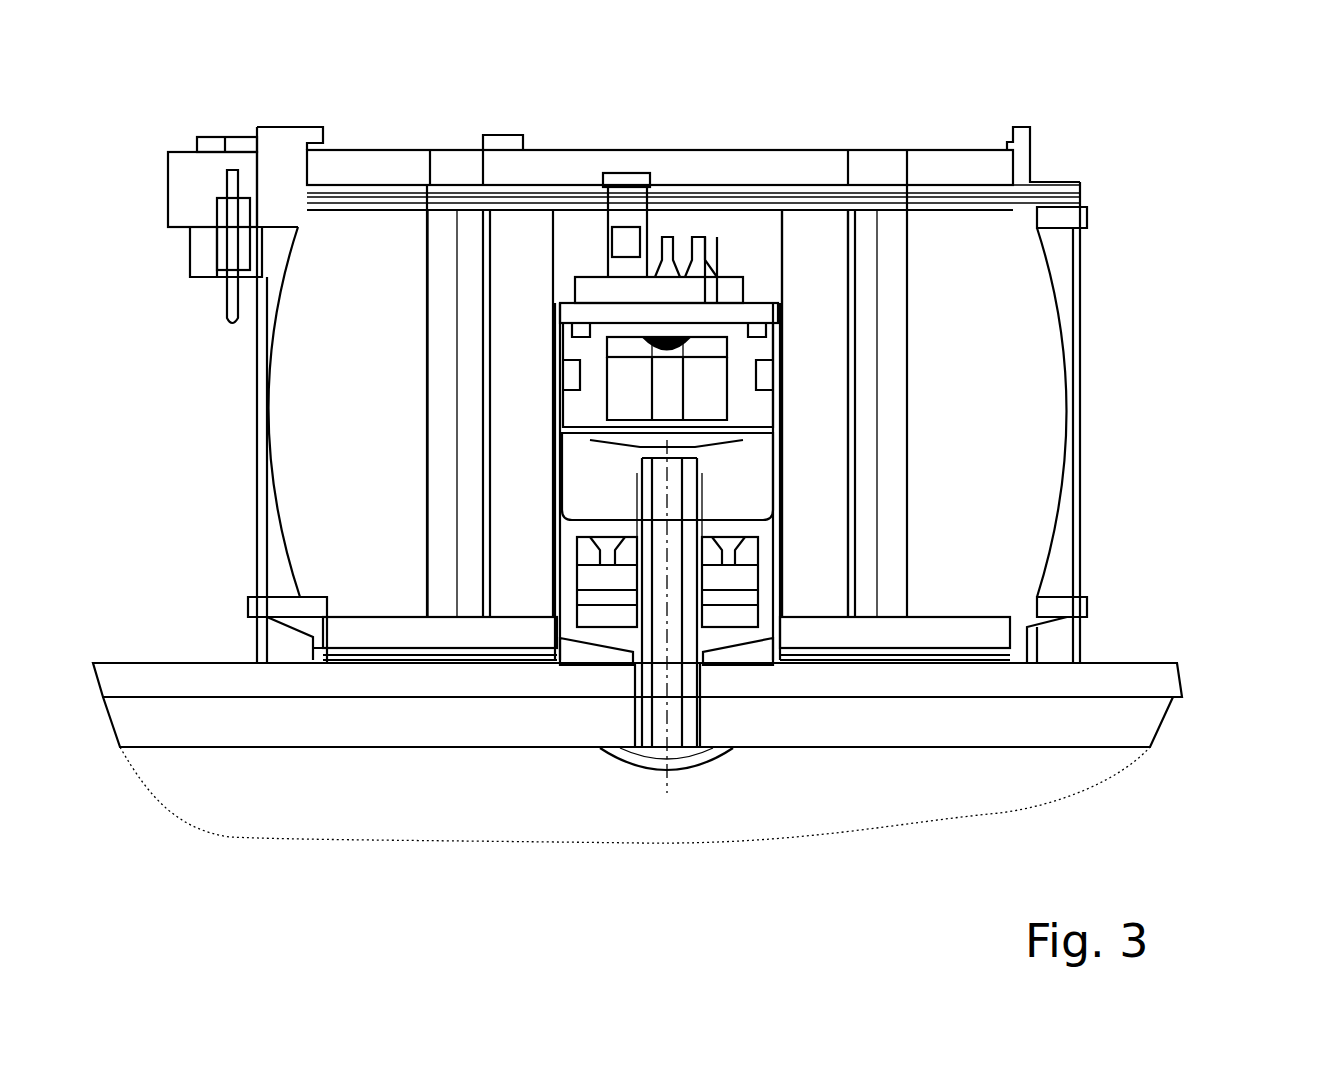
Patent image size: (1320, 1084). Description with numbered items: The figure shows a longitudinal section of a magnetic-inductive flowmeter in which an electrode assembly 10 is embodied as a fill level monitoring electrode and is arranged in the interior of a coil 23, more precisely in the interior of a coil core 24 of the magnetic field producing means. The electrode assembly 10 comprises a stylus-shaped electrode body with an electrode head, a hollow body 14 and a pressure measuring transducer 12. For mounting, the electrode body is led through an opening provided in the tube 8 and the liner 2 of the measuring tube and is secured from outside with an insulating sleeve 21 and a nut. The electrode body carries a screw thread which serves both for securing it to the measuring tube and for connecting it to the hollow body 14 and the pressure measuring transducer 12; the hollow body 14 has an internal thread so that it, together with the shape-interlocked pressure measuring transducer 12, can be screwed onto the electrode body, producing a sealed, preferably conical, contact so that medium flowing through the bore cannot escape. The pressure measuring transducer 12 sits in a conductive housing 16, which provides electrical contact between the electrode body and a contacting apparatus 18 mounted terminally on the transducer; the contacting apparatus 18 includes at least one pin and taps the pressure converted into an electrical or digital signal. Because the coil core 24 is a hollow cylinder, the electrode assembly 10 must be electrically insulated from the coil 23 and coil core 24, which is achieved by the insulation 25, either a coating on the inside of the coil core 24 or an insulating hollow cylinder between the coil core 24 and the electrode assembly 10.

The liner 2 is at (1152, 720).
The tube 8 is at (1173, 675).
The electrode assembly 10 is at (733, 783).
The pressure measuring transducer 12 is at (717, 402).
The hollow body 14 is at (757, 490).
The housing 16 is at (758, 389).
The contacting apparatus 18 is at (672, 240).
The insulating sleeve 21 is at (605, 638).
The coil 23 is at (1028, 283).
The coil core 24 is at (820, 310).
The insulation 25 is at (782, 327).